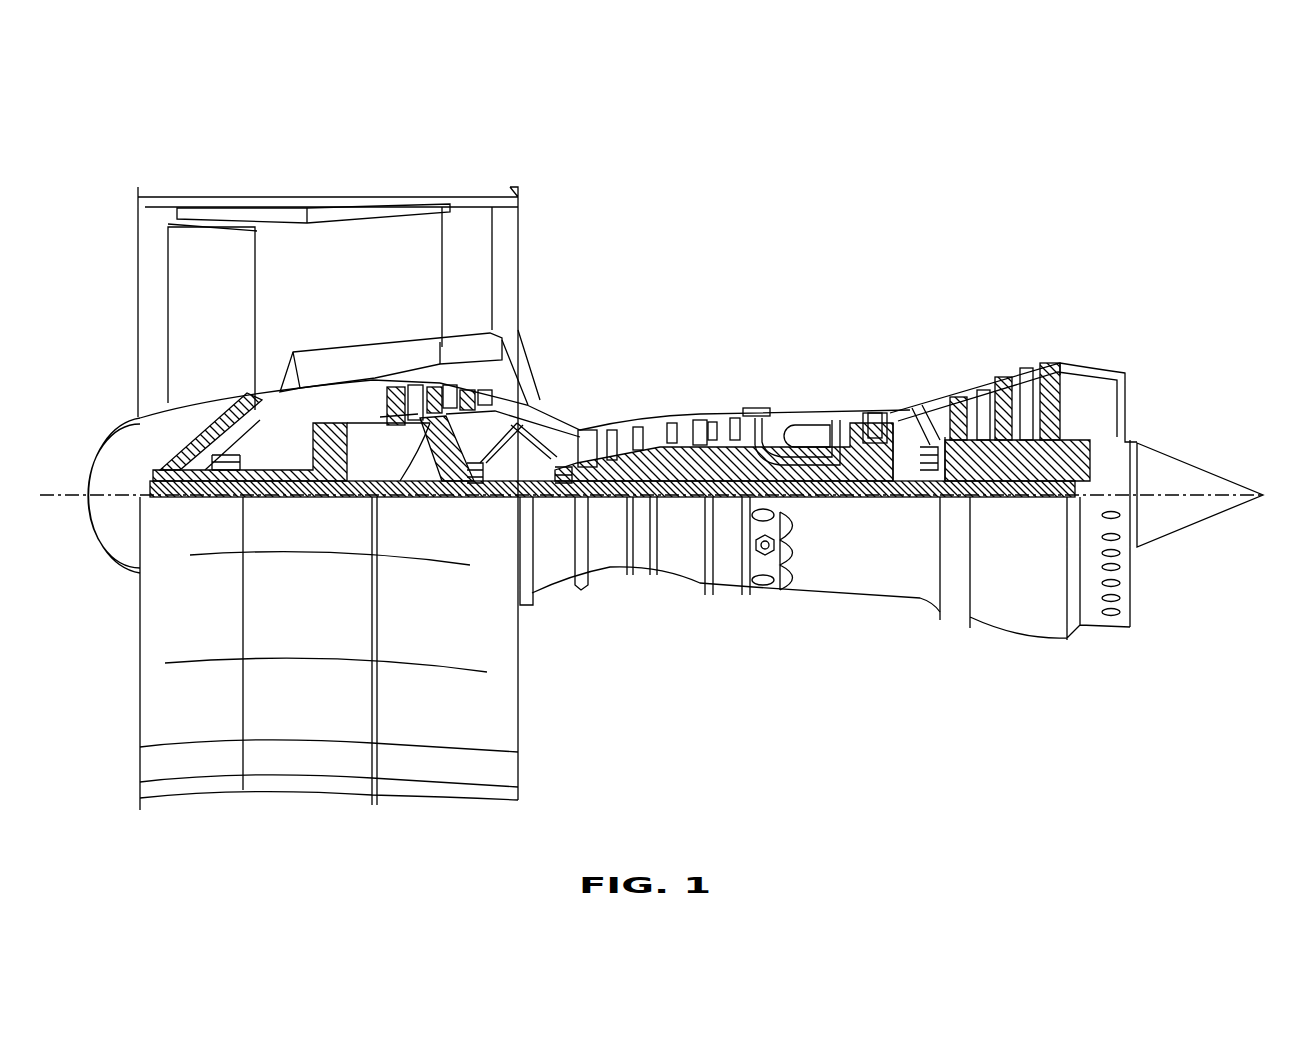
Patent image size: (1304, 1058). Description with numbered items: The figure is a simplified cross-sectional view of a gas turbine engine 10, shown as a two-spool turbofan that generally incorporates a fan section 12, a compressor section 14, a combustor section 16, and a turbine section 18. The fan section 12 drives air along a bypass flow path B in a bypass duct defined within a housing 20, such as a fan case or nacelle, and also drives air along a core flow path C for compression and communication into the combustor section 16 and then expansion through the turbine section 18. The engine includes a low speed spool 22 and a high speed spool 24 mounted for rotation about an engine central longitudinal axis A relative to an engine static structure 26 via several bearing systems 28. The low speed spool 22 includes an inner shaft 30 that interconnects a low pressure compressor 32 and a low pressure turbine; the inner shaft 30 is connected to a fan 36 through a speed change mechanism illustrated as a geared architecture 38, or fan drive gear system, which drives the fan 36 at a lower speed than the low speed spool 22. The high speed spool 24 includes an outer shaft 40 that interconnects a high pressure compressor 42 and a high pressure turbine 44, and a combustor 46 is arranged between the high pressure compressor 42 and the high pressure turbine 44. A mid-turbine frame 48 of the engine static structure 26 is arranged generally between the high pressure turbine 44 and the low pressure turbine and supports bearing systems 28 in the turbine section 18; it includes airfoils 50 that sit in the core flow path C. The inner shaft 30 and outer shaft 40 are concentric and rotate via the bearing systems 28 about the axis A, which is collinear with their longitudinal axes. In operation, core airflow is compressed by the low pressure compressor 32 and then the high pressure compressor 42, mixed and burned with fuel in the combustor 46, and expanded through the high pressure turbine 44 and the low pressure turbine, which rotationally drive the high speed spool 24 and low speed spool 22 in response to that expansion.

The gas turbine engine 10 is at (810, 250).
The fan section 12 is at (262, 172).
The compressor section 14 is at (572, 385).
The combustor section 16 is at (803, 375).
The turbine section 18 is at (962, 335).
The housing 20 is at (318, 200).
The low speed spool 22 is at (688, 505).
The high speed spool 24 is at (717, 457).
The engine static structure 26 is at (724, 600).
The bearing systems 28 is at (478, 488).
The inner shaft 30 is at (533, 497).
The low pressure compressor 32 is at (438, 400).
The fan 36 is at (193, 325).
The geared architecture 38 is at (330, 478).
The outer shaft 40 is at (810, 465).
The high pressure compressor 42 is at (673, 427).
The high pressure turbine 44 is at (870, 407).
The combustor 46 is at (805, 432).
The mid-turbine frame 48 is at (918, 390).
The airfoils 50 is at (945, 440).
The engine central longitudinal axis A is at (1216, 496).
The bypass flow path B is at (270, 273).
The core flow path C is at (320, 380).